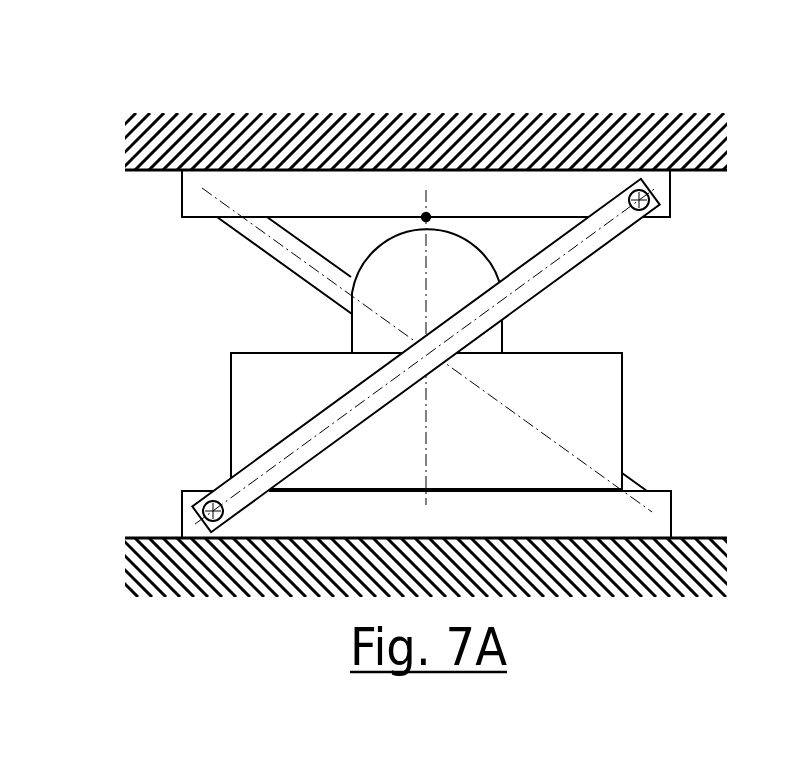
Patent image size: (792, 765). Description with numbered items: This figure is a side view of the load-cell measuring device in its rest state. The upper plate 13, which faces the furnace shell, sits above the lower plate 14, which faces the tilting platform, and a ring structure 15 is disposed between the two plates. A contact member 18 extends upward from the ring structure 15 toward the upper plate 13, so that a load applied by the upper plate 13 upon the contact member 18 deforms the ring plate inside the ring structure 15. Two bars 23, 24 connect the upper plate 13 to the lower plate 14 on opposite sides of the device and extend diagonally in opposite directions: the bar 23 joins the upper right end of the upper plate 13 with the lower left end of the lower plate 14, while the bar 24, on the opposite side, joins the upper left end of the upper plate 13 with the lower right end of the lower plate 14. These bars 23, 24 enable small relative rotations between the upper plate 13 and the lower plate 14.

The upper plate 13 is at (672, 198).
The lower plate 14 is at (672, 513).
The ring structure 15 is at (623, 413).
The contact member 18 is at (497, 246).
The bar 23 is at (562, 278).
The bar 24 is at (277, 263).